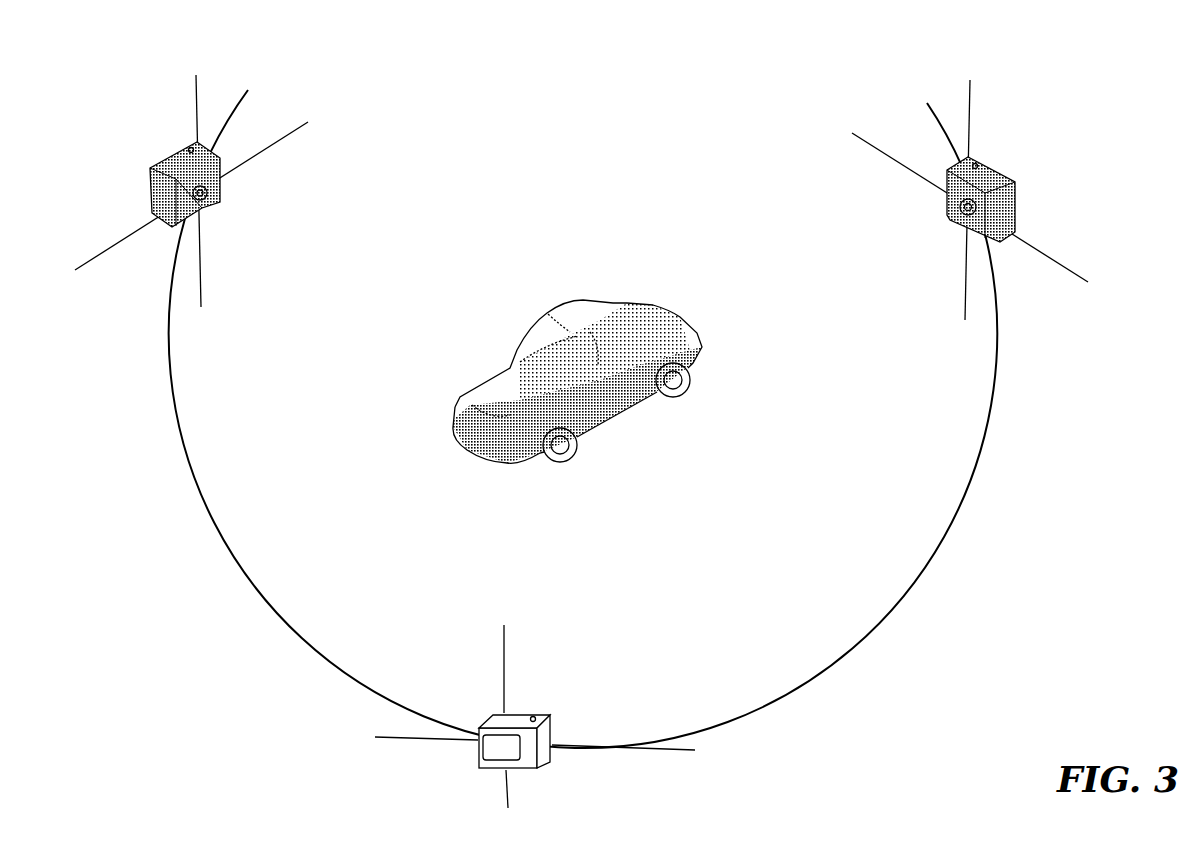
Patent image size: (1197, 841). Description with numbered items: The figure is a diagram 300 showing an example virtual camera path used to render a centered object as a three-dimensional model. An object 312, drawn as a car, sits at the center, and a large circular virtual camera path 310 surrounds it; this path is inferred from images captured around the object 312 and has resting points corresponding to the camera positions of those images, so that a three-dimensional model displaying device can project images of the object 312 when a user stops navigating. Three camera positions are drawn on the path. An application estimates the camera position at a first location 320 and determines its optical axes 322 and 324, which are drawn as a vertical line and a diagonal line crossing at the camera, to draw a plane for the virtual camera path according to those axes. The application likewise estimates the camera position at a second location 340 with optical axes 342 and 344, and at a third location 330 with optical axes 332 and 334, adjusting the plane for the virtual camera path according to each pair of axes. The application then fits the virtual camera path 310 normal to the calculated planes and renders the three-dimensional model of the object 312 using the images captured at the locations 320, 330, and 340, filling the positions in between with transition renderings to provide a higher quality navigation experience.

The diagram 300 is at (1064, 52).
The virtual camera path 310 is at (966, 513).
The object 312 is at (671, 271).
The camera position at first location 320 is at (1018, 158).
The optical axis 322 is at (986, 103).
The optical axis 324 is at (1041, 238).
The camera position at third location 330 is at (240, 200).
The optical axis 332 is at (206, 263).
The optical axis 334 is at (320, 123).
The camera position at second location 340 is at (545, 698).
The optical axis 342 is at (523, 648).
The optical axis 344 is at (696, 740).